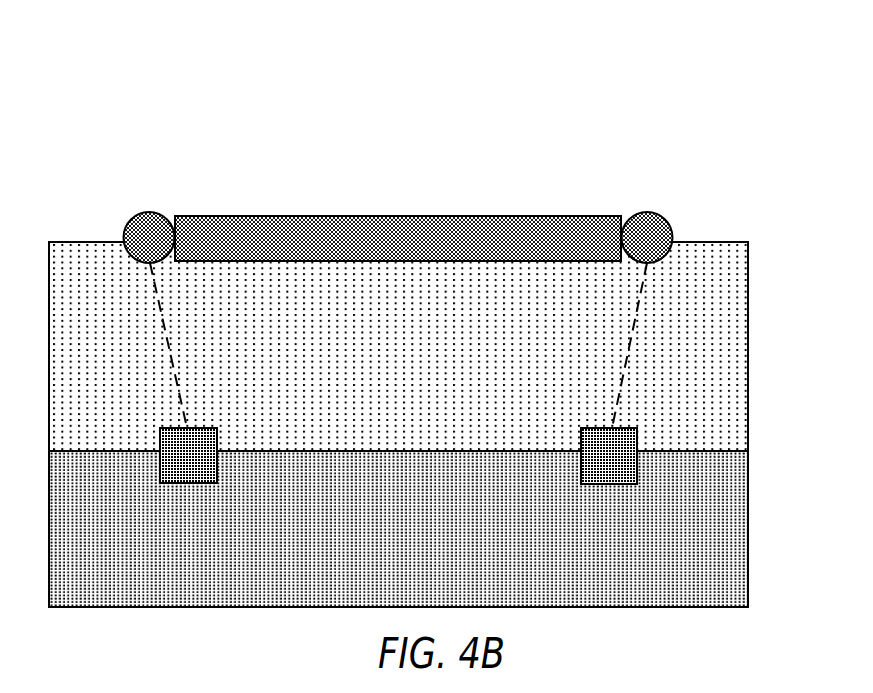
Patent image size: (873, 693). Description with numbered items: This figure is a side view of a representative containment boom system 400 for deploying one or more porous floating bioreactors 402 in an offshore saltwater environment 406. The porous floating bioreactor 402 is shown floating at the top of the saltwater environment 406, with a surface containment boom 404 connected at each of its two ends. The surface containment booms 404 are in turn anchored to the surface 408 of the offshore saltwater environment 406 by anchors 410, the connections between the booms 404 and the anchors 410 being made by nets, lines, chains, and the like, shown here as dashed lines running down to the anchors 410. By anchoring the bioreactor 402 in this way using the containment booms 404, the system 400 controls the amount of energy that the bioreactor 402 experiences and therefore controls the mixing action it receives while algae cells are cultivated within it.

The containment boom system 400 is at (439, 316).
The porous floating bioreactor 402 is at (445, 236).
The containment boom 404 is at (661, 231).
The offshore saltwater environment 406 is at (416, 358).
The surface of the offshore saltwater environment 408 is at (415, 538).
The anchor 410 is at (646, 428).